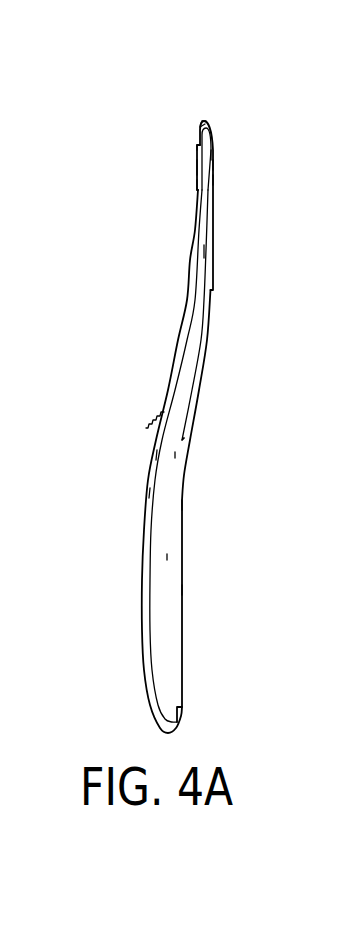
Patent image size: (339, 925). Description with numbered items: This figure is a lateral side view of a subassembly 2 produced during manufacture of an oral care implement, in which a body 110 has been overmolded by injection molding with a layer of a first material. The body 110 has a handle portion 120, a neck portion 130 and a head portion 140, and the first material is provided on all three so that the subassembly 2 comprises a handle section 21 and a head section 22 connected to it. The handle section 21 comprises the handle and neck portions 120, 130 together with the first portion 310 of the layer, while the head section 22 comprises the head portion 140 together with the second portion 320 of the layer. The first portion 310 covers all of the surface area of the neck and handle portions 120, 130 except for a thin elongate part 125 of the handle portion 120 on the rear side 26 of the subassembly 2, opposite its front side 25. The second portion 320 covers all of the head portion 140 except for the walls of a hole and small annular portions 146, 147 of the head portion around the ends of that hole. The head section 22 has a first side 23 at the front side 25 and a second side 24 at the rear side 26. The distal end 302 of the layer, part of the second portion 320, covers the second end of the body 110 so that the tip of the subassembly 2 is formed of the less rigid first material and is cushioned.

The subassembly 2 is at (148, 305).
The handle section 21 is at (172, 590).
The head section 22 is at (215, 178).
The first side 23 is at (197, 168).
The second side 24 is at (215, 163).
The front side 25 is at (157, 455).
The rear side 26 is at (190, 443).
The body 110 is at (175, 455).
The handle portion 120 is at (167, 557).
The thin elongate part 125 is at (183, 505).
The neck portion 130 is at (202, 252).
The head portion 140 is at (197, 180).
The first annular portion 146 is at (197, 147).
The second annular portion 147 is at (212, 150).
The distal end 302 is at (203, 118).
The first portion 310 is at (150, 493).
The second portion 320 is at (198, 128).